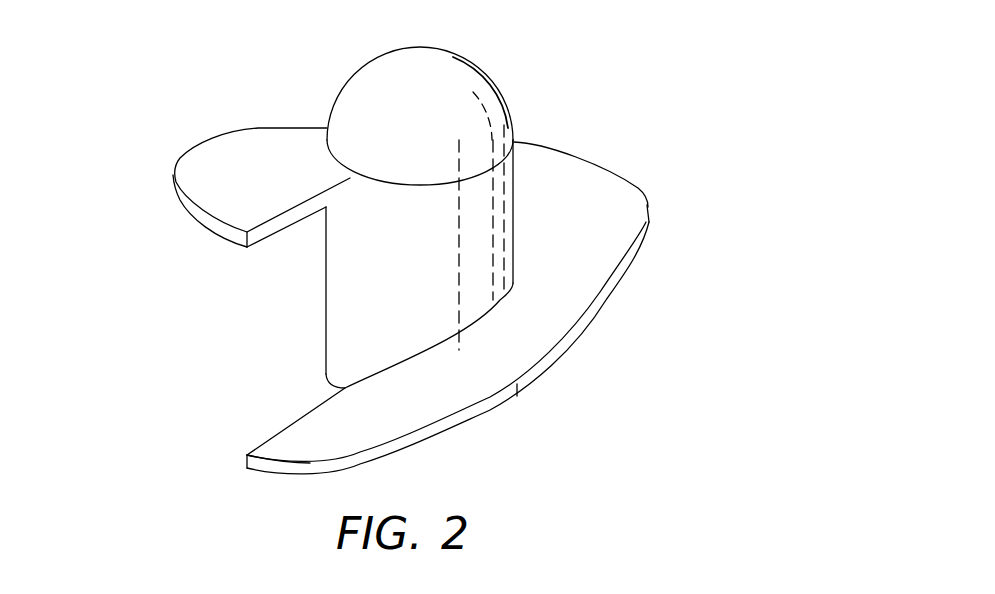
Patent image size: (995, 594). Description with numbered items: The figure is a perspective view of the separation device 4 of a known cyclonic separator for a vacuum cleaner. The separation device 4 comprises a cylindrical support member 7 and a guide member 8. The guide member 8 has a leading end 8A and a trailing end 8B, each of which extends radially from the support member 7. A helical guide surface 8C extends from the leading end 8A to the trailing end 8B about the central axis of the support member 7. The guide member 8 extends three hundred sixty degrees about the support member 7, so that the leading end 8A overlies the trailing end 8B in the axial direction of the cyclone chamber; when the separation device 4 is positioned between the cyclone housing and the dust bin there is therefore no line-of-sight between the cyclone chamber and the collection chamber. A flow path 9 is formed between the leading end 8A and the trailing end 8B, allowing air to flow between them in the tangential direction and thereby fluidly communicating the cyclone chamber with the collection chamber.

The separation device 4 is at (211, 73).
The cylindrical support member 7 is at (486, 207).
The guide member 8 is at (590, 227).
The leading end 8A is at (268, 232).
The trailing end 8B is at (287, 434).
The helical guide surface 8C is at (517, 342).
The flow path 9 is at (287, 330).